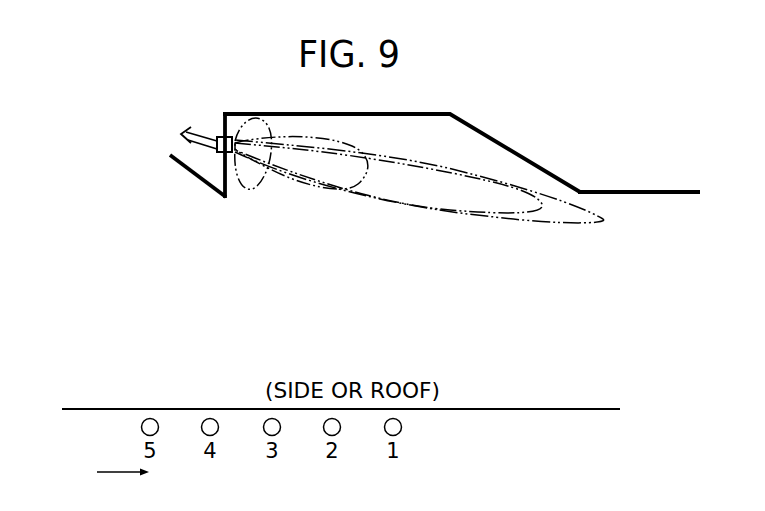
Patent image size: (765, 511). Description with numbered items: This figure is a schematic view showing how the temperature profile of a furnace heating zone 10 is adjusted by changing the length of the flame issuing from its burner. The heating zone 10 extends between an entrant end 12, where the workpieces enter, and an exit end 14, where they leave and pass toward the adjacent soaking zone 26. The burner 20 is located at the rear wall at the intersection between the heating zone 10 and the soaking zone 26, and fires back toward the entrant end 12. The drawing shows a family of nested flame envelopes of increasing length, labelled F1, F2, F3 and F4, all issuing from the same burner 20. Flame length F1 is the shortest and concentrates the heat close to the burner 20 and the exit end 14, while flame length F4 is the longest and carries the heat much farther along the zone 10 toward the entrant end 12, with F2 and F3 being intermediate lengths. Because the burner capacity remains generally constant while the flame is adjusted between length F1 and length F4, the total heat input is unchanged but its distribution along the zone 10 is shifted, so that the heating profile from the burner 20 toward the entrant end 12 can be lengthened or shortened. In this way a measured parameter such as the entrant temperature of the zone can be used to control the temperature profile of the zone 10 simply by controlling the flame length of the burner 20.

The heating zone 10 is at (461, 116).
The entrant end 12 is at (640, 212).
The exit end 14 is at (228, 202).
The burner 20 is at (219, 136).
The soaking zone 26 is at (186, 168).
The flame length F1 is at (243, 190).
The flame length F2 is at (308, 190).
The flame length F3 is at (416, 207).
The flame length F4 is at (547, 223).